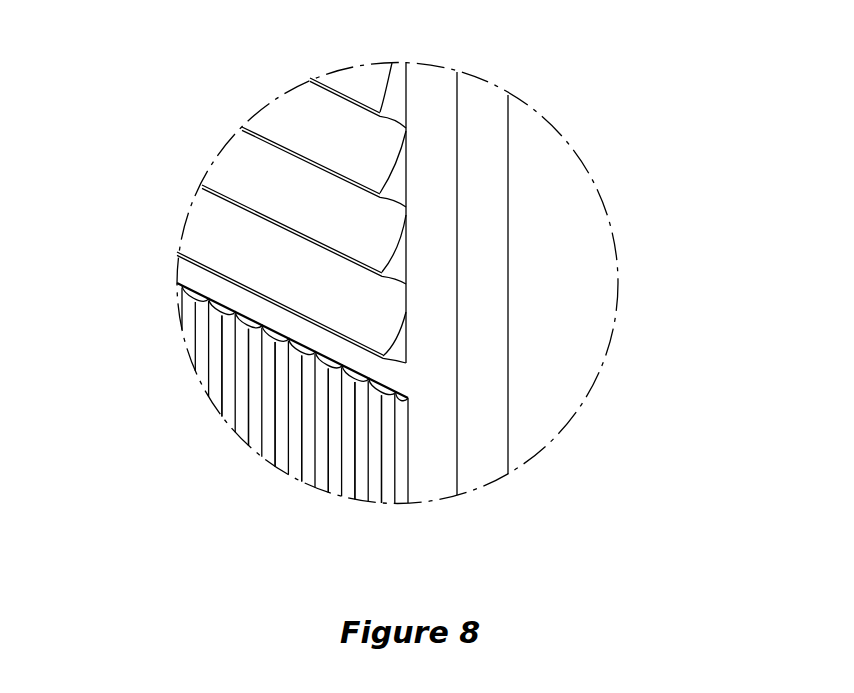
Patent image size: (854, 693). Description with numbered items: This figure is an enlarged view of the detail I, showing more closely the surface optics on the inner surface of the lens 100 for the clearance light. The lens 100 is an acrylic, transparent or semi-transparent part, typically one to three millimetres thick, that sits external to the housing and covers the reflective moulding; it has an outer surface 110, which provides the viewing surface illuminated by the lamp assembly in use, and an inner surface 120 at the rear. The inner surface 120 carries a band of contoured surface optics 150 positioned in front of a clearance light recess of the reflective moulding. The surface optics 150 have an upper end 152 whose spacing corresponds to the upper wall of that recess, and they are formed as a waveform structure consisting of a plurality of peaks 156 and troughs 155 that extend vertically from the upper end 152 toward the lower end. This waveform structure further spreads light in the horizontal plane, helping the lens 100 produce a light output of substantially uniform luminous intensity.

The detail I is at (599, 197).
The lens 100 is at (440, 233).
The outer surface 110 is at (510, 172).
The inner surface 120 is at (407, 107).
The surface optics 150 is at (407, 482).
The upper end 152 is at (365, 373).
The troughs 155 is at (190, 318).
The peaks 156 is at (256, 413).